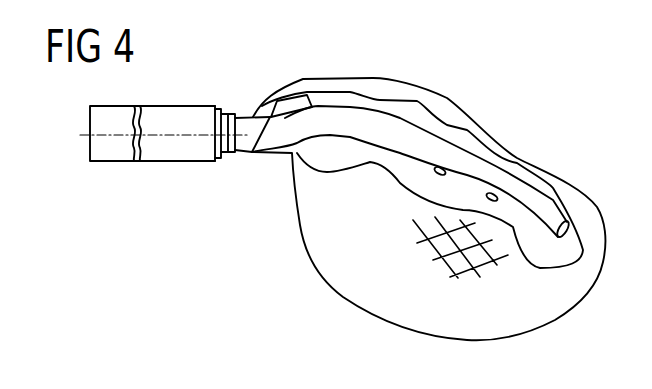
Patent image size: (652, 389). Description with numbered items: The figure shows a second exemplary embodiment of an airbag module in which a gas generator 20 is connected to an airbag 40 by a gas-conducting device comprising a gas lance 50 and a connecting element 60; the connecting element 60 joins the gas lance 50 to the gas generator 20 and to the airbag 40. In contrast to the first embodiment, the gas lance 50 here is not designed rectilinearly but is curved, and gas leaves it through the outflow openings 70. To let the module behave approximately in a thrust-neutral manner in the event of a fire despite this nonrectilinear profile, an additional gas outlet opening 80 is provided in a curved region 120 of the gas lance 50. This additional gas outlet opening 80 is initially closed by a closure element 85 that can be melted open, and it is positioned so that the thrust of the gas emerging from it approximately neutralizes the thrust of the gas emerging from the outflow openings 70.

The gas generator 20 is at (168, 152).
The connecting element 60 is at (226, 116).
The additional gas outlet opening 80 is at (250, 153).
The closure element 85 is at (282, 110).
The curved region 120 is at (323, 113).
The gas lance 50 is at (424, 148).
The outflow openings 70 is at (494, 195).
The airbag 40 is at (586, 292).